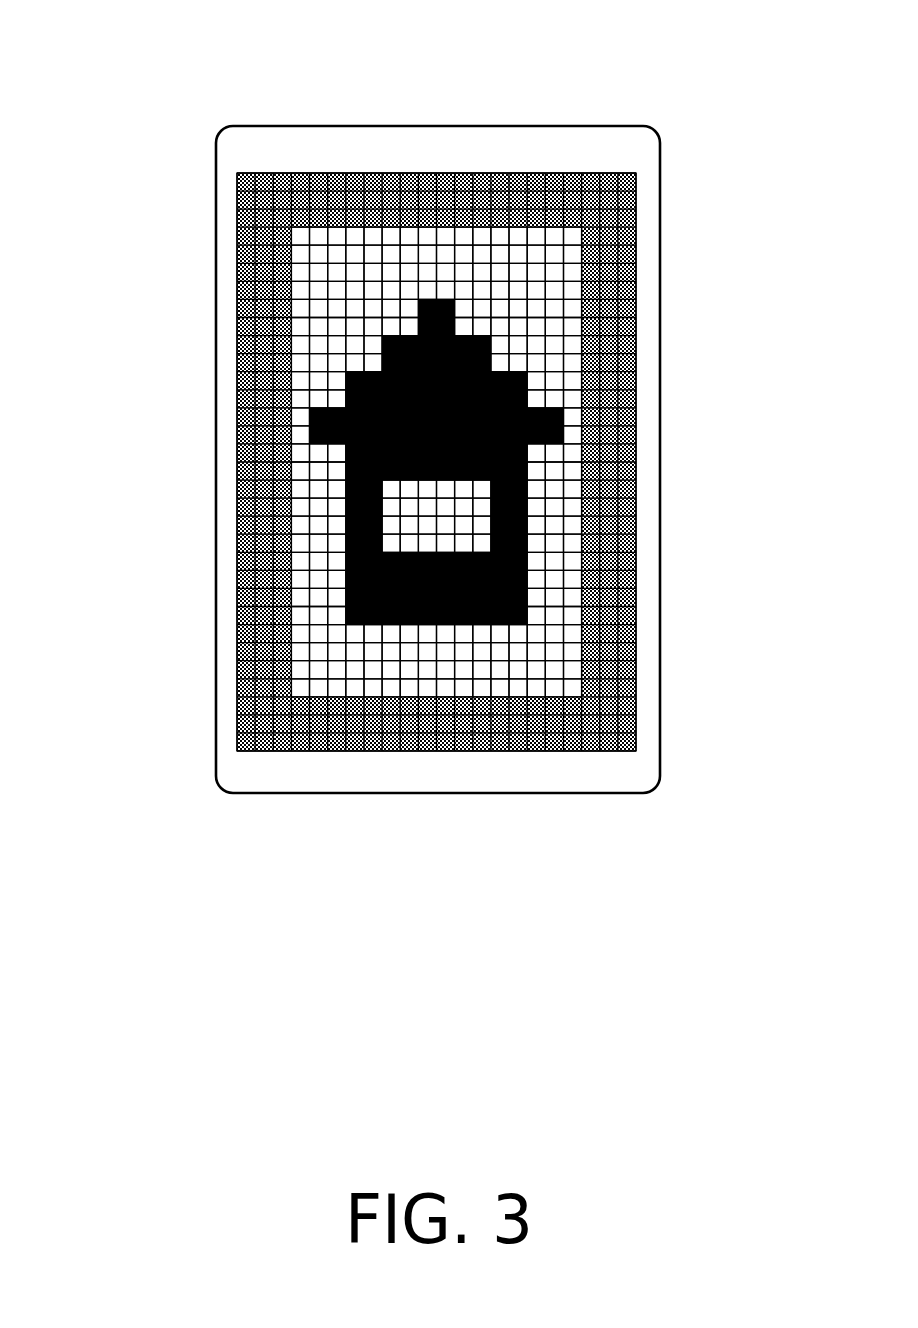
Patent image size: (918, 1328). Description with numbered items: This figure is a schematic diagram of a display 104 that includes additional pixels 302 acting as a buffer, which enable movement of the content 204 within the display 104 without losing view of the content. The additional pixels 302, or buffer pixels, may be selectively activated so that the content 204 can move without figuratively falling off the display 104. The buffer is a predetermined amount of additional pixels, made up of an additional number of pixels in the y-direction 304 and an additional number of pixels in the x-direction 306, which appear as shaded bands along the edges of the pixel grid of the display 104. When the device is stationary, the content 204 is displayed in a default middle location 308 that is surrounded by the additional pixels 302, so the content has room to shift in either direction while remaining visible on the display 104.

The additional pixels 302 is at (228, 165).
The display 104 is at (360, 173).
The additional number of pixels in the x-direction 306 is at (478, 193).
The additional number of pixels in the y-direction 304 is at (249, 402).
The default middle location 308 is at (553, 288).
The content 204 is at (564, 425).